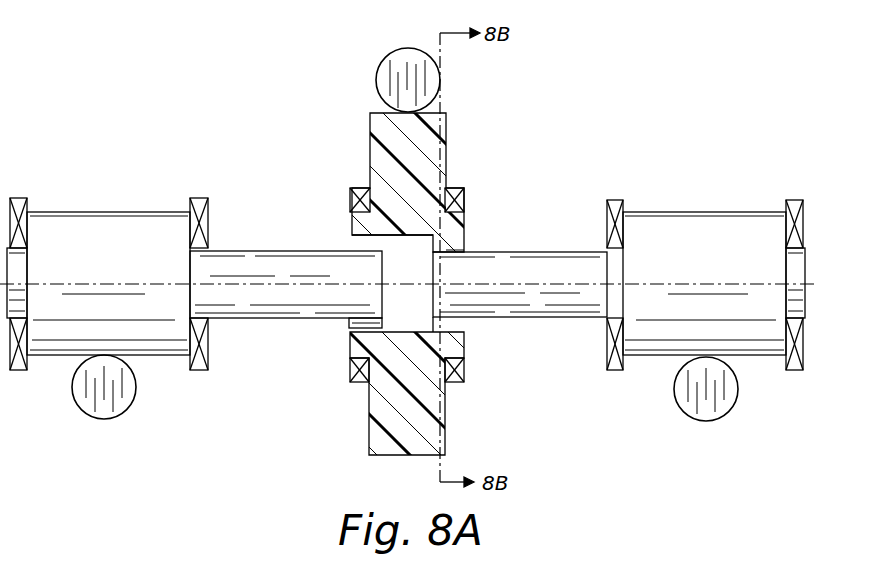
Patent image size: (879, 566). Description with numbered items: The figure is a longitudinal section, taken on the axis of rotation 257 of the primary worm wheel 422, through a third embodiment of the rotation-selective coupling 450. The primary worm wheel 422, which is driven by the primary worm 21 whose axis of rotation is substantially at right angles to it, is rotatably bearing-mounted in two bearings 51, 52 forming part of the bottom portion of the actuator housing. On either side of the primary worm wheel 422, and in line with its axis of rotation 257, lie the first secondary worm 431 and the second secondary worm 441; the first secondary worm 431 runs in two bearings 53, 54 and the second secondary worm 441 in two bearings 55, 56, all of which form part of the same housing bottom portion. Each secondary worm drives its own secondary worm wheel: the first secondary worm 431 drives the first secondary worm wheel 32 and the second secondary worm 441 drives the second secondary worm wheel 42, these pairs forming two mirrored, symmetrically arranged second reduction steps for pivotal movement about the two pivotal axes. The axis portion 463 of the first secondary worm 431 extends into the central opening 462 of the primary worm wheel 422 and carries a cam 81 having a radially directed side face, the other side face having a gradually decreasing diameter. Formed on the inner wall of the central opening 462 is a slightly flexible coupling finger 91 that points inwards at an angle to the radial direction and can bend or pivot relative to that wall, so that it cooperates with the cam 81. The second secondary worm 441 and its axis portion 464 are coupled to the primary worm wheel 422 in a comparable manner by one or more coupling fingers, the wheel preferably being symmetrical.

The primary worm 21 is at (380, 72).
The first secondary worm wheel 32 is at (729, 411).
The second secondary worm wheel 42 is at (133, 401).
The bearing 51 is at (359, 188).
The bearing 52 is at (458, 188).
The bearing 53 is at (613, 200).
The bearing 54 is at (797, 200).
The bearing 55 is at (20, 198).
The bearing 56 is at (200, 198).
The cam 81 is at (348, 326).
The coupling finger 91 is at (465, 242).
The rotation axis 257 is at (680, 284).
The primary worm wheel 422 is at (446, 128).
The first secondary worm 431 is at (688, 212).
The second secondary worm 441 is at (110, 212).
The rotation-selective coupling 450 is at (478, 410).
The central opening 462 is at (368, 243).
The axis portion 463 is at (517, 320).
The left shaft 464 is at (263, 320).